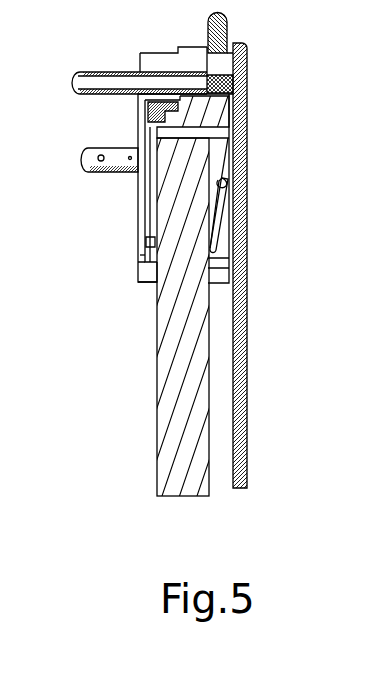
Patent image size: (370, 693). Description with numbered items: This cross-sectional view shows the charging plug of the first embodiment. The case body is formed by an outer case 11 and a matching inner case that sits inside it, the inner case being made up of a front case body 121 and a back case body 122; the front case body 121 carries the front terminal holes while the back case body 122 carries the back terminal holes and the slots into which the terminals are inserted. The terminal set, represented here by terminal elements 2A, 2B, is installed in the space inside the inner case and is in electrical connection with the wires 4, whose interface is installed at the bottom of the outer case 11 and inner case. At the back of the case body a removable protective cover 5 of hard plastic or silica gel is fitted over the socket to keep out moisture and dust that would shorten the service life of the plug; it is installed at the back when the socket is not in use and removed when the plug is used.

The first fixing member 2A is at (82, 159).
The second fixing member 2B is at (72, 81).
The wires 4 is at (157, 358).
The protective cover 5 is at (247, 297).
The outer case 11 is at (138, 193).
The front case body 121 is at (141, 233).
The back case body 122 is at (236, 199).